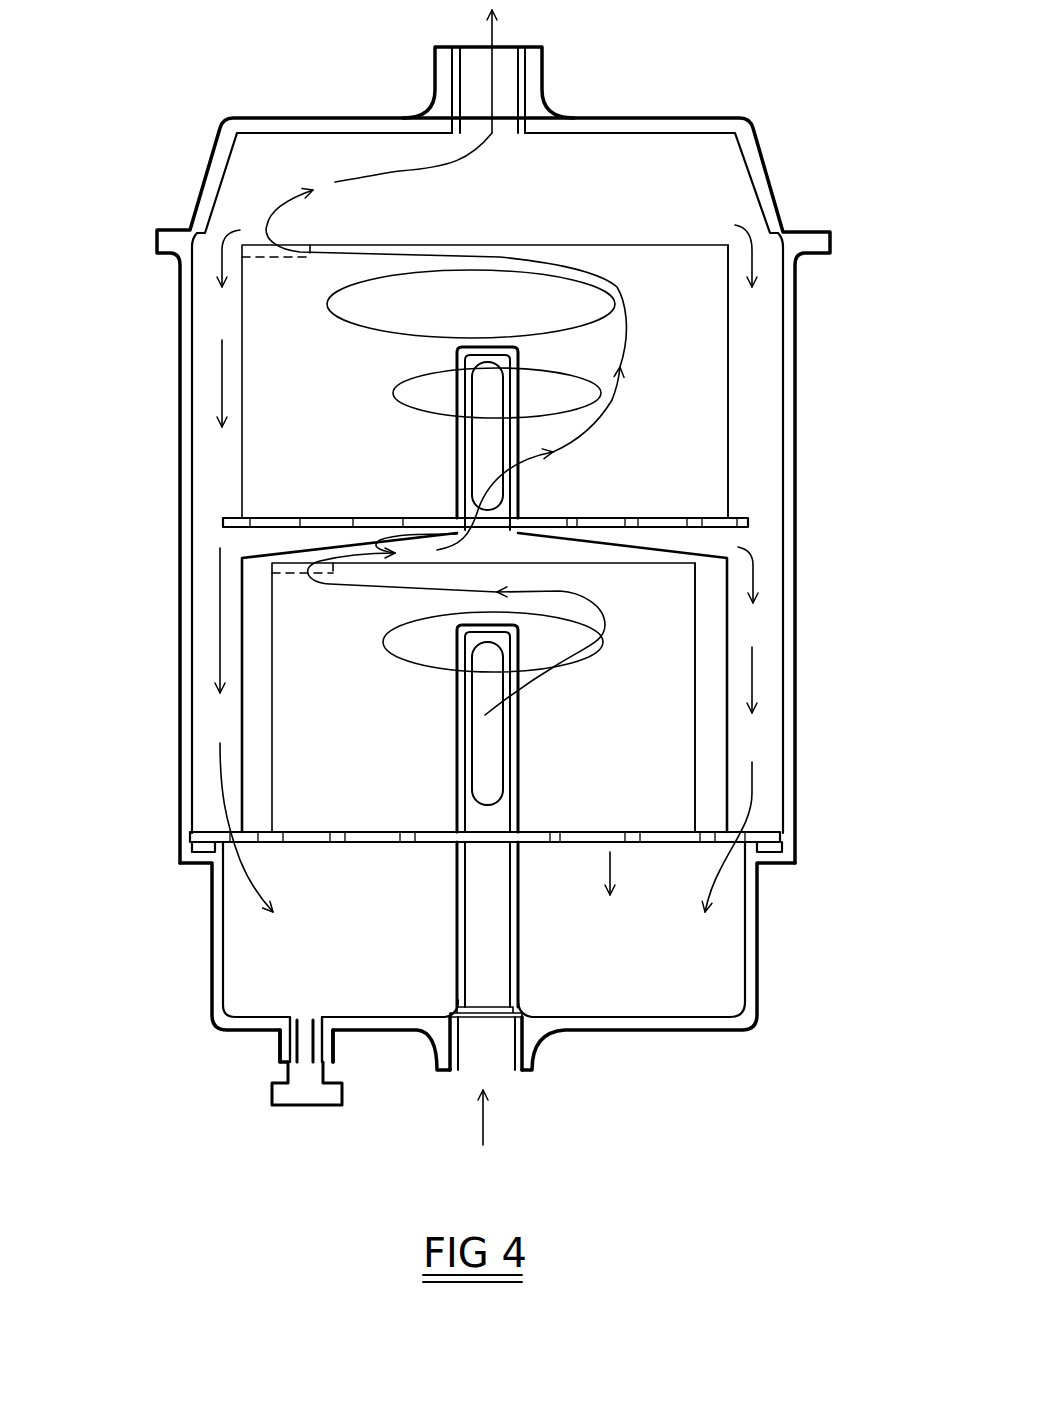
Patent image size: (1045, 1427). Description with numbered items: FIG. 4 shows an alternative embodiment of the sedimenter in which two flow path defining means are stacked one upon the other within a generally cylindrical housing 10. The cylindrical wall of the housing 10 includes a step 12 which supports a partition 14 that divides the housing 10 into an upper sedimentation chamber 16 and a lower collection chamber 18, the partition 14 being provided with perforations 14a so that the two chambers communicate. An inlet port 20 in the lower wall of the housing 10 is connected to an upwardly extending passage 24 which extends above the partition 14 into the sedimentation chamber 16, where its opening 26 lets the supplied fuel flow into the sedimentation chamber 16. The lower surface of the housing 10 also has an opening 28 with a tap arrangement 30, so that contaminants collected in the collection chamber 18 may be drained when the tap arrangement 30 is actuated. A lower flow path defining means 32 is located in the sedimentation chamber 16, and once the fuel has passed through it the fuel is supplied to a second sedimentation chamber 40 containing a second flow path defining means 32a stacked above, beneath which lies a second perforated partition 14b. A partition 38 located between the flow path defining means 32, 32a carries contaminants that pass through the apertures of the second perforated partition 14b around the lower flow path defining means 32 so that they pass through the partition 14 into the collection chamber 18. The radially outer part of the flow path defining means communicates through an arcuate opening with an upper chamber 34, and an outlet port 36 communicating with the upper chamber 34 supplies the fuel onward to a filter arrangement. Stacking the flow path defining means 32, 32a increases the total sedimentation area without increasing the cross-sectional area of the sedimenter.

The housing 10 is at (795, 715).
The step 12 is at (773, 868).
The partition 14 is at (768, 837).
The perforations 14a is at (663, 850).
The second perforated partition 14b is at (722, 520).
The sedimentation chamber 16 is at (483, 697).
The collection chamber 18 is at (490, 920).
The inlet port 20 is at (530, 1048).
The passage 24 is at (455, 935).
The opening 26 is at (482, 776).
The opening 28 is at (283, 1050).
The tap arrangement 30 is at (305, 1090).
The flow path defining means 32 is at (695, 680).
The second flow path defining means 32a is at (728, 340).
The upper chamber 34 is at (485, 166).
The outlet port 36 is at (533, 82).
The partition 38 is at (728, 618).
The upper filter chamber 40 is at (485, 381).